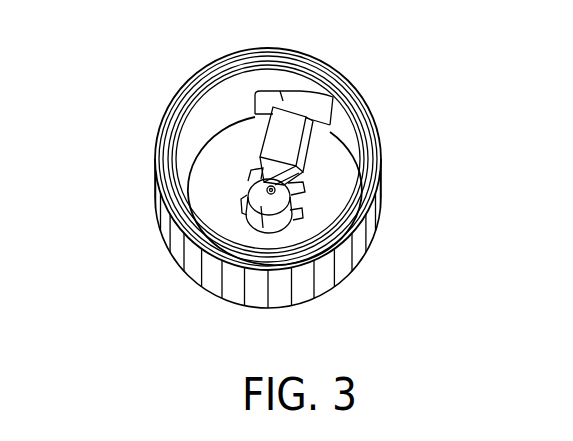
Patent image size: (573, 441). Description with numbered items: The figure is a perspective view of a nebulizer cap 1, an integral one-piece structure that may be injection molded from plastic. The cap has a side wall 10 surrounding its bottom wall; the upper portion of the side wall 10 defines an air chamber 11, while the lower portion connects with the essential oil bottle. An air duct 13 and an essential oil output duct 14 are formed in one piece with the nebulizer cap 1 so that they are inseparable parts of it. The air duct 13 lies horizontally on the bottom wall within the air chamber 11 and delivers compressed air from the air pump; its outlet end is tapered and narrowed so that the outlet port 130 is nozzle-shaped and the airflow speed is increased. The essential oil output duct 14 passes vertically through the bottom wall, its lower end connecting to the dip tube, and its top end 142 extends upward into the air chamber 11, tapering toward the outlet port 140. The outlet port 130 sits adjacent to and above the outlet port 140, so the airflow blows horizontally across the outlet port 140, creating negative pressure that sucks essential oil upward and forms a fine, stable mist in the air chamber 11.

The nebulizer cap 1 is at (92, 53).
The side wall 10 is at (160, 190).
The air chamber 11 is at (237, 153).
The air duct 13 is at (285, 135).
The essential oil output duct 14 is at (297, 220).
The outlet port 130 is at (275, 189).
The outlet port 140 is at (281, 194).
The top end 142 is at (261, 203).